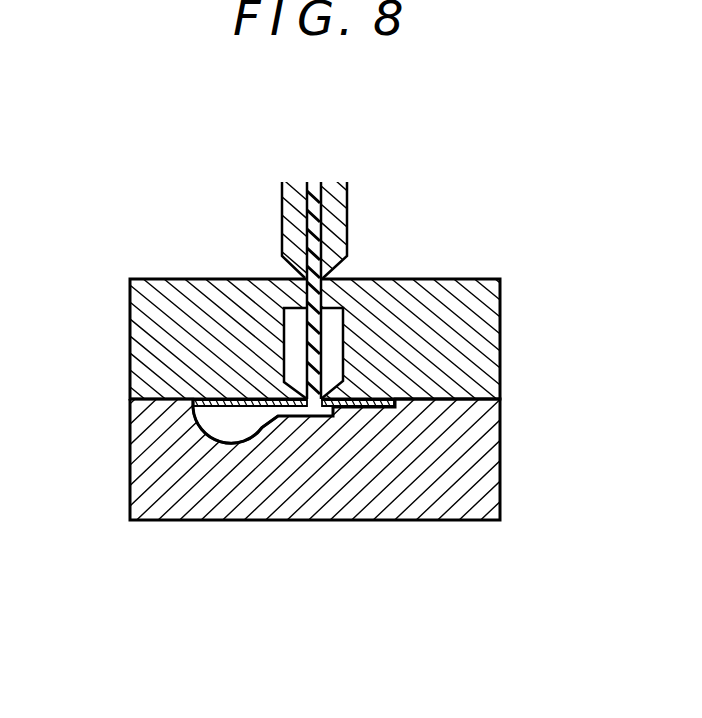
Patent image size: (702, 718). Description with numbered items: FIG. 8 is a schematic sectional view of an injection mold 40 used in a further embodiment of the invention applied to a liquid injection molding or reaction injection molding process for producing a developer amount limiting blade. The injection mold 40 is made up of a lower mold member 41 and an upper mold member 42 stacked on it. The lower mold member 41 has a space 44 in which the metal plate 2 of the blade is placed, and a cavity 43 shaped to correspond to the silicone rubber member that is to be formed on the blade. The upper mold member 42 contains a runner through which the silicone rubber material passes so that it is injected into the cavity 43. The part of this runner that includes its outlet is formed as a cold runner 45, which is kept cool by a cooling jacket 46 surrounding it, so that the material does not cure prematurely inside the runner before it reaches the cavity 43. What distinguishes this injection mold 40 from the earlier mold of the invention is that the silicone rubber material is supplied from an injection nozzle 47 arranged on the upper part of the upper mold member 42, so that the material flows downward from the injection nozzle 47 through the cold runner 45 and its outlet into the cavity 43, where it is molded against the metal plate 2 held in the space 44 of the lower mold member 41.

The injection mold 40 is at (407, 200).
The lower mold member 41 is at (455, 470).
The upper mold member 42 is at (455, 339).
The cavity 43 is at (236, 427).
The space 44 is at (197, 407).
The cold runner 45 is at (322, 352).
The cooling jacket 46 is at (330, 325).
The injection nozzle 47 is at (287, 229).
The metal plate 2 is at (370, 404).